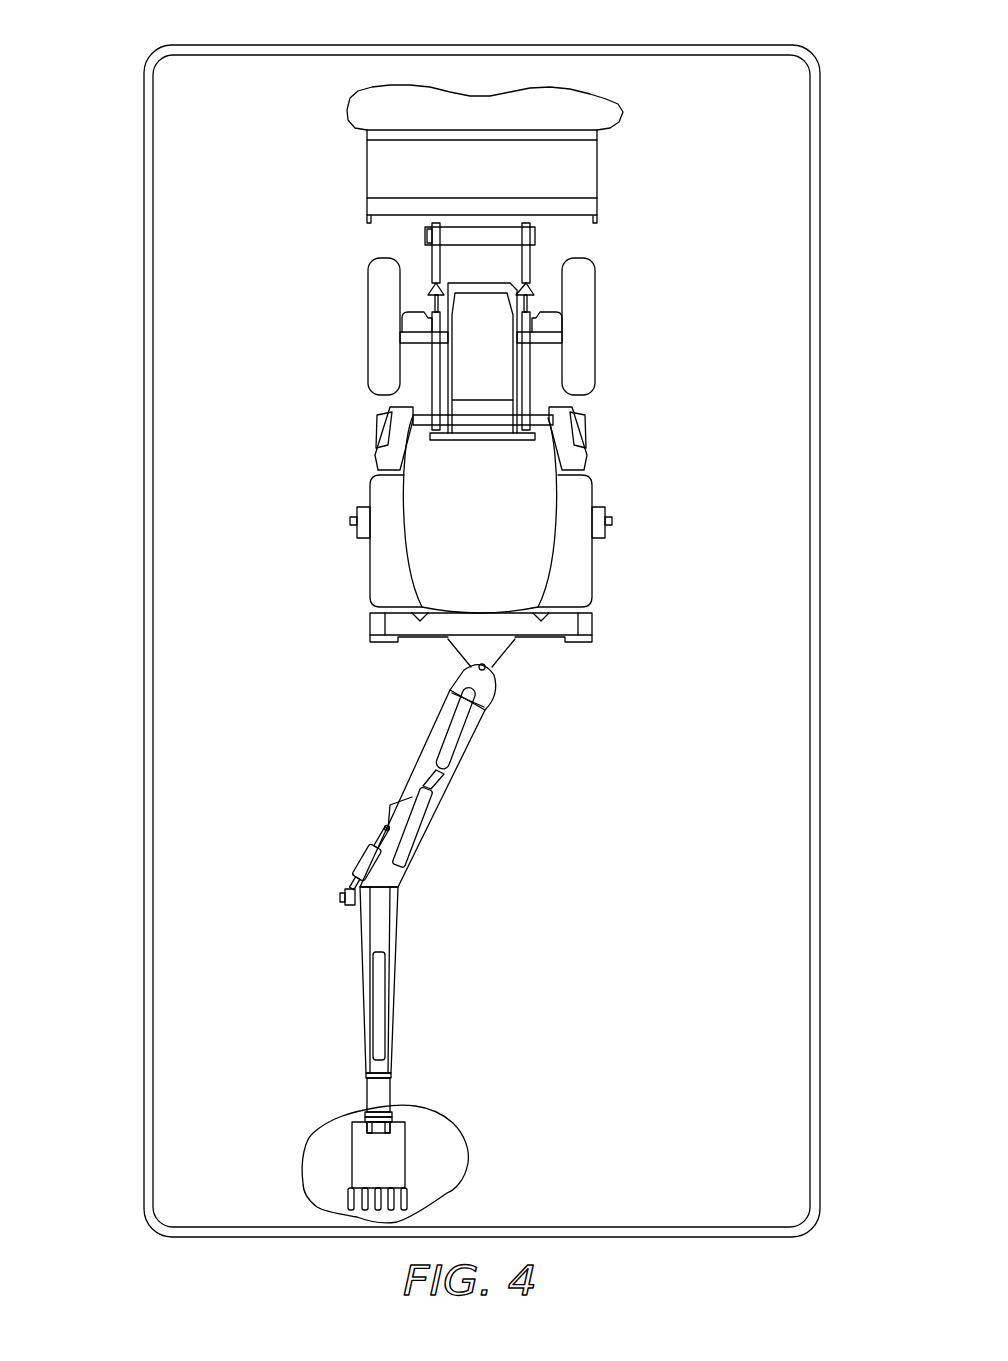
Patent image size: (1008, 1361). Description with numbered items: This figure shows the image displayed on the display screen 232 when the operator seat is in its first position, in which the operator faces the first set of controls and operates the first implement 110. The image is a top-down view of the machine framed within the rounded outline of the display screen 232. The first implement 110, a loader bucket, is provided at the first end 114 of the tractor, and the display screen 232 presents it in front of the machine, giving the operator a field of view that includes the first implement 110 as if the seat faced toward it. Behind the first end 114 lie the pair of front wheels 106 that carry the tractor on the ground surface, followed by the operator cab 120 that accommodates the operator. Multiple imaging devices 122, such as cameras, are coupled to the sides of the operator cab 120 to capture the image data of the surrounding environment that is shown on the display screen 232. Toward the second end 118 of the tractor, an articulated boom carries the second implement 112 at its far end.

The display screen 232 is at (116, 197).
The first end 114 is at (548, 70).
The first implement 110 is at (608, 172).
The front wheels 106 is at (368, 312).
The operator cab 120 is at (622, 478).
The imaging devices 122 is at (350, 520).
The second end 118 is at (581, 664).
The second implement 112 is at (280, 1153).